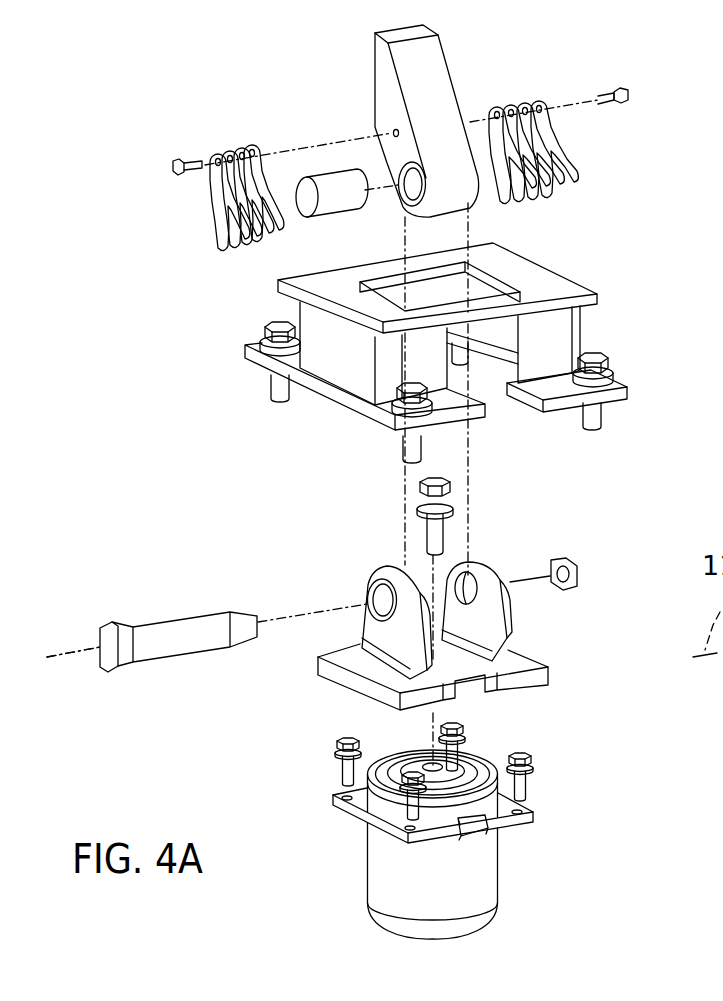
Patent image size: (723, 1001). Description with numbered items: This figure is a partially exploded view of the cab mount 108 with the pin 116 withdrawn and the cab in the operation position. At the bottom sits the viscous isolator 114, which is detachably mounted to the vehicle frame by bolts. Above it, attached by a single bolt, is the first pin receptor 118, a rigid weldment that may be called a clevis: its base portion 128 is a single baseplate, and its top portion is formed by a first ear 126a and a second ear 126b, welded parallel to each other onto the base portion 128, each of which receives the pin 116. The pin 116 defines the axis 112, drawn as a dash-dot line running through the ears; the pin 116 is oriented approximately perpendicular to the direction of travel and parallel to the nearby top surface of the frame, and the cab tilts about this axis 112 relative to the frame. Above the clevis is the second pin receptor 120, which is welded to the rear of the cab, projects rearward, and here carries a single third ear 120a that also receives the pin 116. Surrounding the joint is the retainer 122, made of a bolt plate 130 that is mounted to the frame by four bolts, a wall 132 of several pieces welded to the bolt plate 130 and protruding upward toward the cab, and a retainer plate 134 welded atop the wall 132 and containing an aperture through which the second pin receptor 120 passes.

The cab mount 108 is at (443, 836).
The axis 112 is at (50, 652).
The viscous isolator 114 is at (440, 867).
The pin 116 is at (180, 640).
The first pin receptor 118 is at (461, 635).
The second pin receptor 120 is at (431, 79).
The third ear 120a is at (451, 200).
The retainer 122 is at (447, 363).
The first ear 126a is at (408, 587).
The second ear 126b is at (492, 569).
The base portion 128 is at (476, 692).
The bolt plate 130 is at (360, 409).
The wall 132 is at (340, 347).
The retainer plate 134 is at (292, 281).